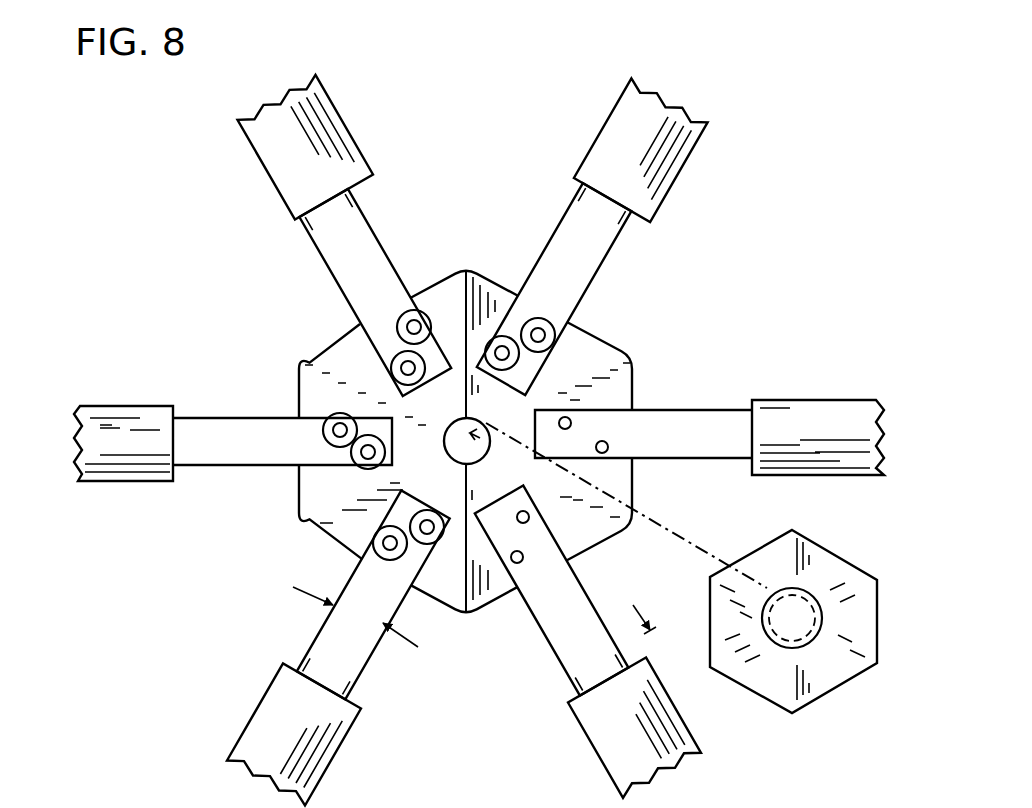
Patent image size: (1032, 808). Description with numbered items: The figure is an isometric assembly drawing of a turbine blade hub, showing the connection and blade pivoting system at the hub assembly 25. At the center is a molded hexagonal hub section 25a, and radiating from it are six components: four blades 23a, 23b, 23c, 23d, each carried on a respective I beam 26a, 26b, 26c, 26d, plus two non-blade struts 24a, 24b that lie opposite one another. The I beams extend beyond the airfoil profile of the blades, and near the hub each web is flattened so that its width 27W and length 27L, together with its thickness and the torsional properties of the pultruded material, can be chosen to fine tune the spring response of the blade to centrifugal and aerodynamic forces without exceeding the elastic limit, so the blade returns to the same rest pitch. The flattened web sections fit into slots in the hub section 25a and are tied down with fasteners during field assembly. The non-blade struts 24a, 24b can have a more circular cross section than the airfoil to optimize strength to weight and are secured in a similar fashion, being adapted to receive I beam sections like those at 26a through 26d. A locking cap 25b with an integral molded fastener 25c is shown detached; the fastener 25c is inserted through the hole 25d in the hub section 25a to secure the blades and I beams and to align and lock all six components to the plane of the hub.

The blade 23a is at (270, 135).
The blade 23b is at (633, 123).
The blade 23c is at (258, 747).
The blade 23d is at (625, 728).
The non-blade strut 24a is at (125, 417).
The non-blade strut 24b is at (802, 430).
The hub assembly 25 is at (120, 234).
The hub section 25a is at (593, 347).
The locking cap 25b is at (773, 685).
The fastener 25c is at (807, 605).
The hole 25d is at (448, 448).
The I beam 26a is at (333, 217).
The I beam 26b is at (588, 203).
The I beam 26c is at (305, 655).
The I beam 26d is at (587, 670).
The length 27L is at (600, 552).
The width 27W is at (378, 633).